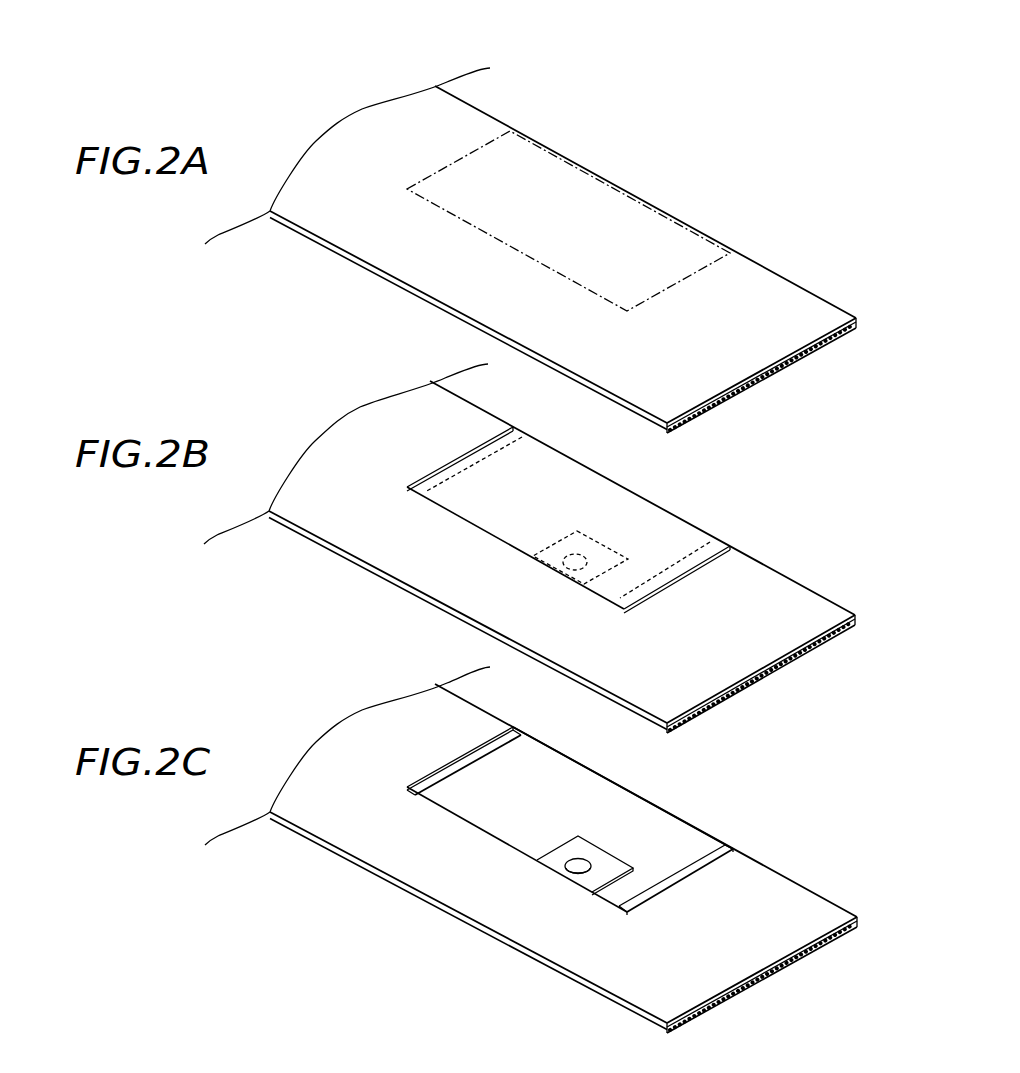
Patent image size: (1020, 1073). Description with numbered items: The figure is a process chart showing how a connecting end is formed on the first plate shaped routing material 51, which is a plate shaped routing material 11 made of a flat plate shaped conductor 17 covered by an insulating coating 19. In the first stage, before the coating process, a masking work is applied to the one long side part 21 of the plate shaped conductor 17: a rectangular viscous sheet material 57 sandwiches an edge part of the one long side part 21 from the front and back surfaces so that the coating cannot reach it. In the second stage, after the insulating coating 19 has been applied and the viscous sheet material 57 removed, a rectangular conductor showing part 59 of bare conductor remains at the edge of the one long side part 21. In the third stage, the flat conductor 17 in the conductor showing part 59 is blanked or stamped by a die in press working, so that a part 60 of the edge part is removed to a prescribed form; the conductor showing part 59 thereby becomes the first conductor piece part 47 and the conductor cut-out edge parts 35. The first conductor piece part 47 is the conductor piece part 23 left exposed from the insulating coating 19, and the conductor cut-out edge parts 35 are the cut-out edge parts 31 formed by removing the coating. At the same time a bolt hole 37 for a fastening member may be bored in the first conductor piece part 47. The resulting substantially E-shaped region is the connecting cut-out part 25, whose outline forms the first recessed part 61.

In FIG. 2C, the plate shaped routing material 11 is at (390, 895).
In FIG. 2A, the plate shaped conductor 17 is at (750, 386).
In FIG. 2B, the plate shaped conductor 17 is at (752, 684).
In FIG. 2C, the plate shaped conductor 17 is at (745, 994).
In FIG. 2A, the insulating coating 19 is at (771, 303).
In FIG. 2B, the insulating coating 19 is at (757, 604).
In FIG. 2C, the insulating coating 19 is at (772, 908).
In FIG. 2A, the one long side part 21 is at (481, 107).
In FIG. 2B, the one long side part 21 is at (484, 409).
In FIG. 2C, the one long side part 21 is at (483, 709).
In FIG. 2C, the conductor piece part 23 is at (610, 852).
In FIG. 2C, the connecting cut-out part 25 is at (536, 784).
In FIG. 2C, the cut-out edge part 31 is at (462, 765).
In FIG. 2C, the conductor cut-out edge part 35 is at (524, 847).
In FIG. 2C, the bolt hole 37 is at (575, 859).
In FIG. 2C, the first conductor piece part 47 is at (627, 843).
In FIG. 2C, the first plate shaped routing material 51 is at (468, 921).
In FIG. 2A, the viscous sheet material 57 is at (538, 262).
In FIG. 2B, the conductor showing part 59 is at (531, 480).
In FIG. 2B, the part of the edge part 60 is at (590, 497).
In FIG. 2C, the first recessed part 61 is at (480, 830).